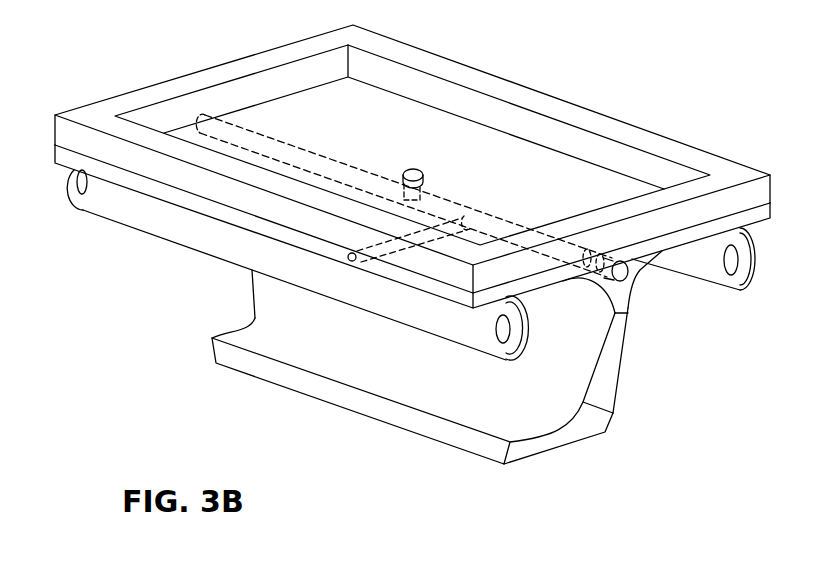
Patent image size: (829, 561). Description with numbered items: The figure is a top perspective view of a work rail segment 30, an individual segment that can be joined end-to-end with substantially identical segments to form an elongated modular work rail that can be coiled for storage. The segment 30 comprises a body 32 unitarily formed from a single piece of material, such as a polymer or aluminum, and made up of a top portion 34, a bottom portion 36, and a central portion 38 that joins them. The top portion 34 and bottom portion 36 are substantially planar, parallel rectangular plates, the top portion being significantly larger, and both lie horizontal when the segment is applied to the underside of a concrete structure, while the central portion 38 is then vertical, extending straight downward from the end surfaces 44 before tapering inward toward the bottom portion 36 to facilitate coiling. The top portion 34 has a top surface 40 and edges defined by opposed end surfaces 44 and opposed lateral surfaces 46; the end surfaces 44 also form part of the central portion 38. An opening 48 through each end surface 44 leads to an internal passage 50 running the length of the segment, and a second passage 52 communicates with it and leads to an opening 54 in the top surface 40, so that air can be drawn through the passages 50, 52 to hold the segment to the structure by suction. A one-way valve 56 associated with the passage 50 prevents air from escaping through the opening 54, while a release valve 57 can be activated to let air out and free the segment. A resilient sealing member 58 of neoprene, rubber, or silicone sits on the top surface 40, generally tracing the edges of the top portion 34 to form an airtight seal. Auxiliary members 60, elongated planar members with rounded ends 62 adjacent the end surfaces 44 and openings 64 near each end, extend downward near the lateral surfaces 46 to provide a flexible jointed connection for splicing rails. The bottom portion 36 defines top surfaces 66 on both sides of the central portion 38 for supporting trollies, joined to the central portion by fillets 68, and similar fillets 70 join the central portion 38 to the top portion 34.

The work rail segment 30 is at (789, 66).
The body 32 is at (185, 291).
The top portion 34 is at (795, 226).
The bottom portion 36 is at (612, 455).
The central portion 38 is at (648, 344).
The top surface 40 is at (383, 115).
The end surfaces 44 is at (637, 257).
The lateral surfaces 46 is at (163, 192).
The opening 48 is at (623, 273).
The internal passage 50 is at (492, 222).
The second passage 52 is at (420, 188).
The opening 54 is at (404, 172).
The one-way valve 56 is at (587, 252).
The release valve 57 is at (350, 268).
The resilient sealing member 58 is at (610, 127).
The auxiliary members 60 is at (323, 275).
The rounded ends 62 is at (776, 300).
The openings 64 is at (75, 181).
The top surfaces 66 is at (375, 392).
The fillets 68 is at (267, 328).
The fillets 70 is at (600, 290).